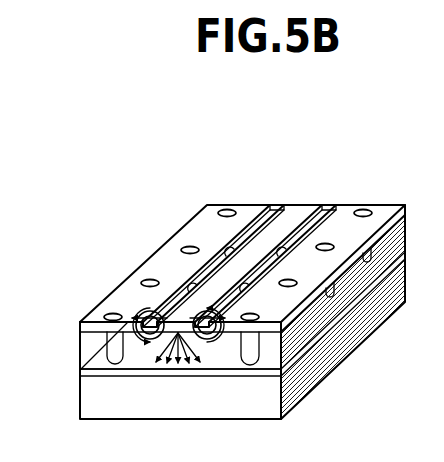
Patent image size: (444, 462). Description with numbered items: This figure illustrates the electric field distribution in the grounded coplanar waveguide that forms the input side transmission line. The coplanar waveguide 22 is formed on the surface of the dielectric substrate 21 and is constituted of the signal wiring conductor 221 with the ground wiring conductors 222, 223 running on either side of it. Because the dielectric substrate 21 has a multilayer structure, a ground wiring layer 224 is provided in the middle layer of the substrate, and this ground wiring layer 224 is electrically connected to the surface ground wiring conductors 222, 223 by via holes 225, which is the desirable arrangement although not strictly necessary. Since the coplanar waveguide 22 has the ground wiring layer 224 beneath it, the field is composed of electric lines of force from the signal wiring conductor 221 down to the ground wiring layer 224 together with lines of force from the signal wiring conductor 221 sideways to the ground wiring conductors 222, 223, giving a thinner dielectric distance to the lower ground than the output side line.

The coplanar waveguide 22 is at (249, 219).
The ground wiring conductor 222 is at (253, 204).
The signal wiring conductor 221 is at (326, 206).
The ground wiring conductor 223 is at (222, 155).
The dielectric substrate 21 is at (80, 342).
The ground wiring layer 224 is at (80, 370).
The via holes 225 is at (253, 348).